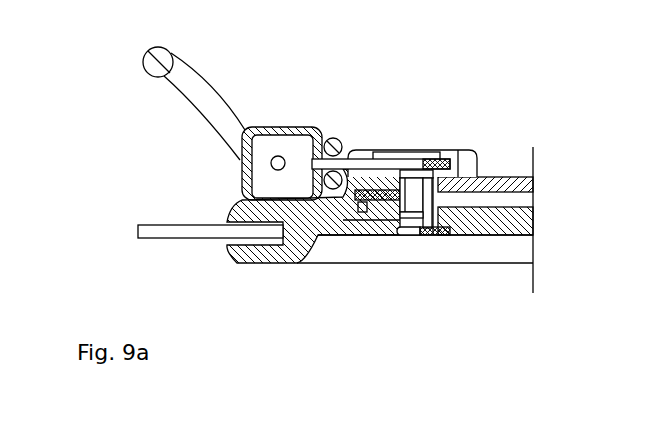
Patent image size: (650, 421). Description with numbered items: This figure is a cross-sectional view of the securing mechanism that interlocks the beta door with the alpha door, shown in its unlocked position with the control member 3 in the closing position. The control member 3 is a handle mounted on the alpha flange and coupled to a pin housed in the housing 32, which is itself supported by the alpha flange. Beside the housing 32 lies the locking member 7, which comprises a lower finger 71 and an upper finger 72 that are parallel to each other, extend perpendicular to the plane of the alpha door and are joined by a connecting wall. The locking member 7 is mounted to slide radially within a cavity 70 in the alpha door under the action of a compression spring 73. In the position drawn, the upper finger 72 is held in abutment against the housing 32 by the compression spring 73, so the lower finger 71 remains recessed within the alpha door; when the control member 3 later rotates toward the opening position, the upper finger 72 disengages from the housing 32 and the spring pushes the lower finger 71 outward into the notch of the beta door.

The control member 3 is at (122, 63).
The housing 32 is at (278, 106).
The locking member 7 is at (403, 142).
The cavity 70 is at (420, 166).
The lower finger 71 is at (427, 252).
The upper finger 72 is at (357, 147).
The compression spring 73 is at (458, 145).